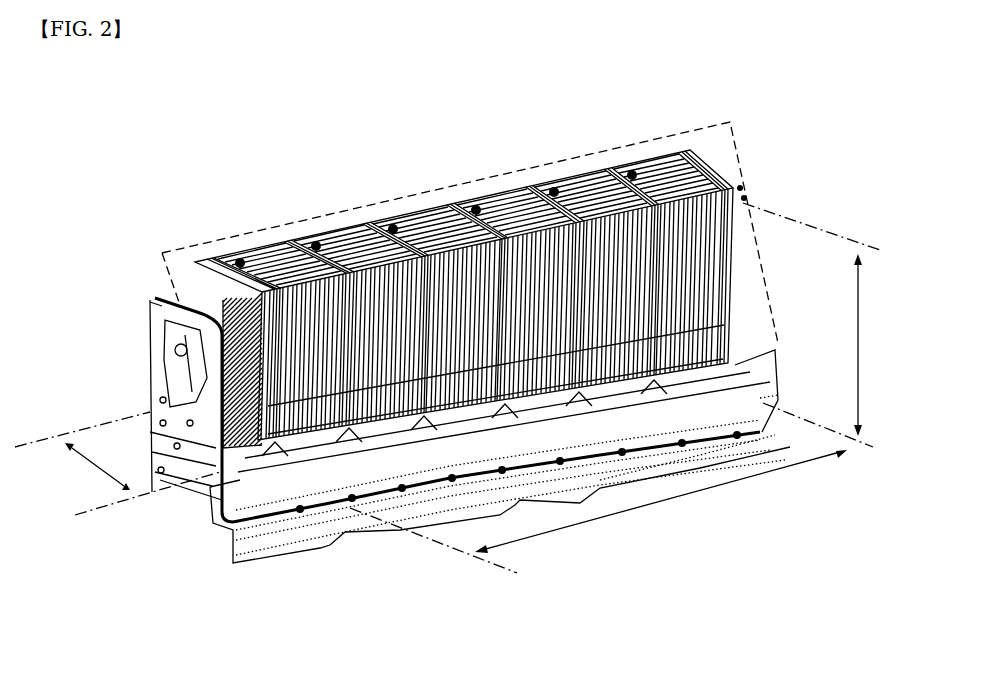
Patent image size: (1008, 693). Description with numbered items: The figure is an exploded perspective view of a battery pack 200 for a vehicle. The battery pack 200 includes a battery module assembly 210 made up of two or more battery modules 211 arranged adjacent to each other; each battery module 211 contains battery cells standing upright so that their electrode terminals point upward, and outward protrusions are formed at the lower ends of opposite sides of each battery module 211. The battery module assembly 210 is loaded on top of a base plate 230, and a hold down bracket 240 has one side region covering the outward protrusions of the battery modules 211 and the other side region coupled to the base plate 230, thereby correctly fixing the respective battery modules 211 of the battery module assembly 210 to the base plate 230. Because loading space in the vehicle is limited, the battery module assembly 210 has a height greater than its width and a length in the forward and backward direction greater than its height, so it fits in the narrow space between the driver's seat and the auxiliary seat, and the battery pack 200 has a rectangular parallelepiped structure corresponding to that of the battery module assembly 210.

The battery pack 200 is at (130, 141).
The battery module assembly 210 is at (736, 148).
The battery module 211 is at (271, 251).
The base plate 230 is at (262, 543).
The hold down bracket 240 is at (310, 473).